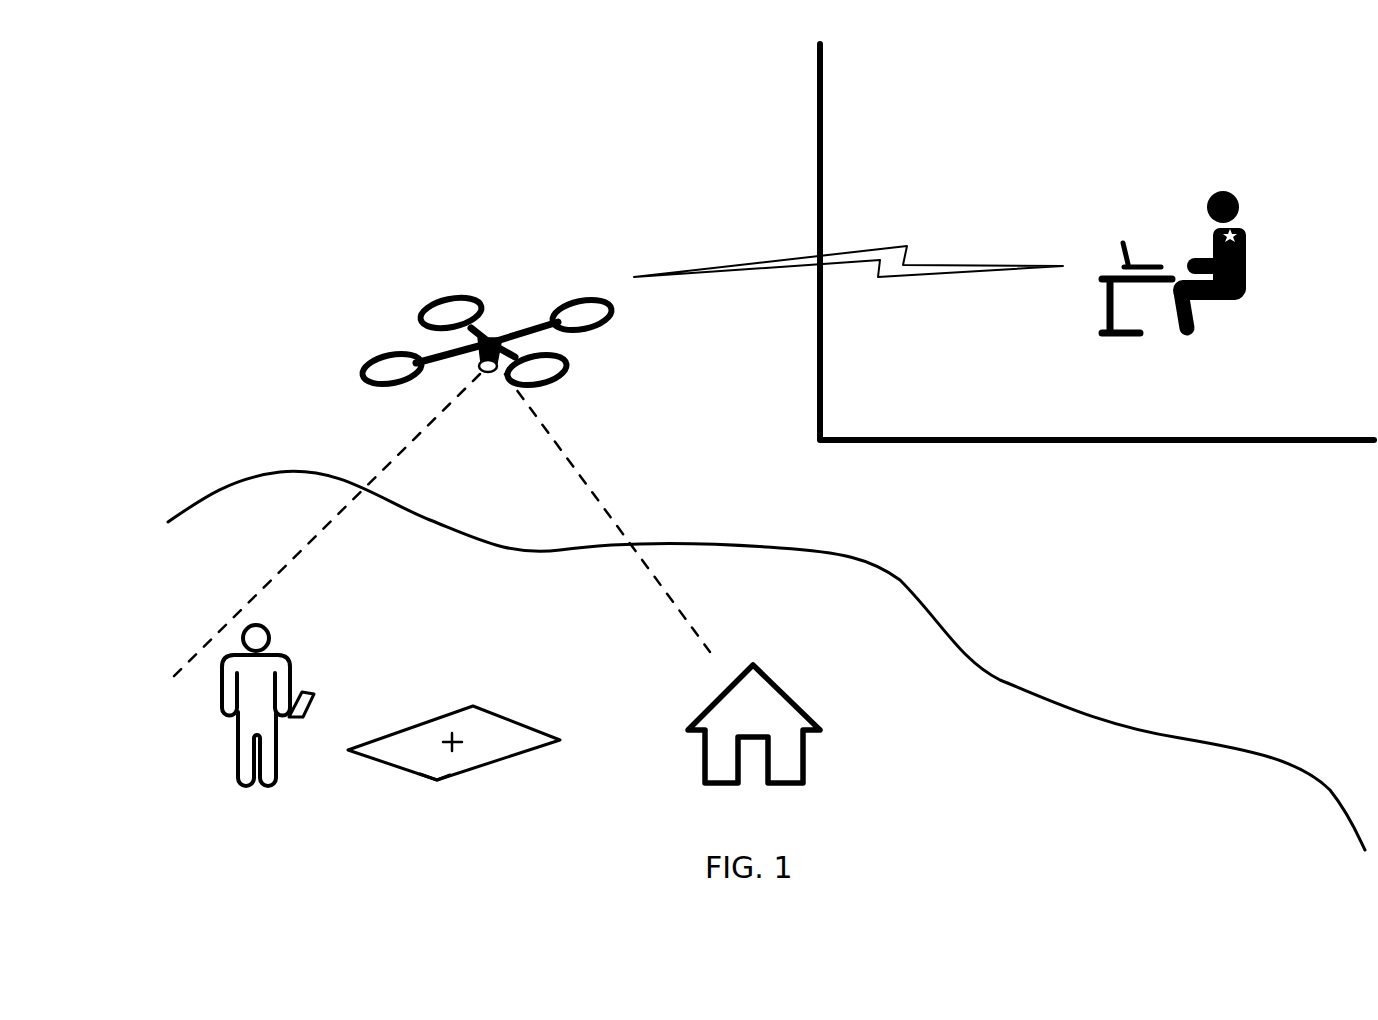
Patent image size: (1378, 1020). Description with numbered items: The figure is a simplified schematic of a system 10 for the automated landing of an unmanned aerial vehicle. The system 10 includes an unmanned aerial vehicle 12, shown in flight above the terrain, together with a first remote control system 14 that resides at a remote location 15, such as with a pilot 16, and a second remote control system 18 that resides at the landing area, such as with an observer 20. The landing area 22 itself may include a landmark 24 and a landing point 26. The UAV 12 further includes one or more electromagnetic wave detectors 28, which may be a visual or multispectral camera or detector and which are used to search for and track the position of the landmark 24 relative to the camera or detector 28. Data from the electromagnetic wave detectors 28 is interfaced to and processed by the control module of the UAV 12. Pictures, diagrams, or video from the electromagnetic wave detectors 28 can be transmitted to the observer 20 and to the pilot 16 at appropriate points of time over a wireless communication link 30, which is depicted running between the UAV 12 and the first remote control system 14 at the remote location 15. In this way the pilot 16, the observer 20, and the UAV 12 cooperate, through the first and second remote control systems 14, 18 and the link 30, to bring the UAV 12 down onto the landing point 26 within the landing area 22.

The system for the automated landing of an unmanned aerial vehicle 10 is at (427, 152).
The unmanned aerial vehicle 12 is at (487, 347).
The first remote control system 14 is at (1145, 237).
The remote location 15 is at (1130, 445).
The pilot 16 is at (1261, 205).
The second remote control system 18 is at (326, 685).
The observer 20 is at (294, 678).
The landing area 22 is at (454, 720).
The landmark 24 is at (437, 782).
The landing point 26 is at (449, 729).
The electromagnetic wave detectors 28 is at (485, 376).
The wireless communication link 30 is at (780, 237).